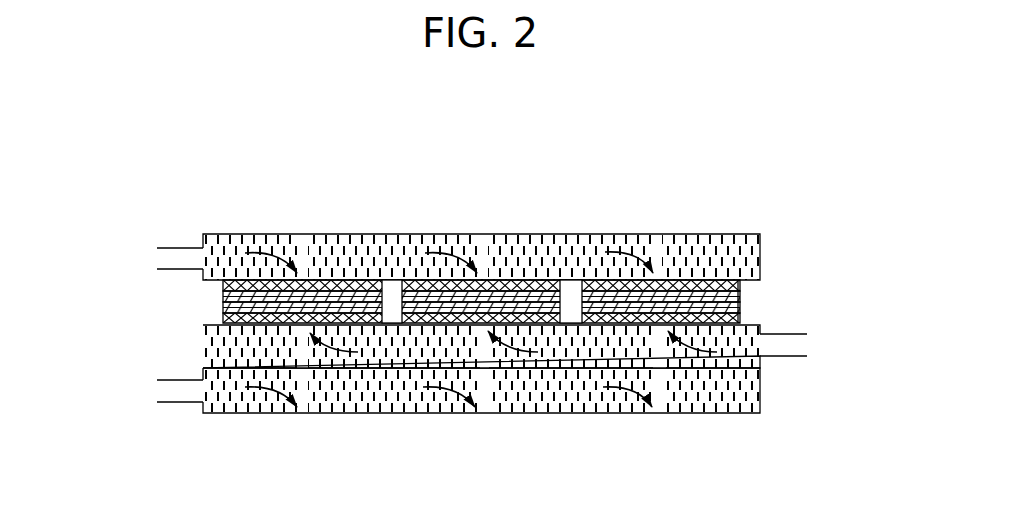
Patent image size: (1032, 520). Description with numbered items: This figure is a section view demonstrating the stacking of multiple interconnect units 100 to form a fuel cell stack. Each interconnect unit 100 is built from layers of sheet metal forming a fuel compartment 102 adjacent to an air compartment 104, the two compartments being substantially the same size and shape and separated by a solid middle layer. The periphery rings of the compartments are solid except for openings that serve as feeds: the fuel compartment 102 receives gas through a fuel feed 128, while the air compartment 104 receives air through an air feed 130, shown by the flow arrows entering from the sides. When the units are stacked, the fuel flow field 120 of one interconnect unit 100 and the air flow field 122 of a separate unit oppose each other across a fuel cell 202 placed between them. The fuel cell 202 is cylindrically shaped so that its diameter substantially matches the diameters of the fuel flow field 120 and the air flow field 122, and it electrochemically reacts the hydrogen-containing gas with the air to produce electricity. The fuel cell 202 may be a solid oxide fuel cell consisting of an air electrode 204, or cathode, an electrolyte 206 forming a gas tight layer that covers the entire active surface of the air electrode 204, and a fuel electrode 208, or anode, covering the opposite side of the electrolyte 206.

The interconnect unit 100 is at (474, 314).
The fuel compartment 102 is at (742, 347).
The air compartment 104 is at (333, 252).
The fuel flow field 120 is at (449, 336).
The air flow field 122 is at (223, 283).
The fuel feed 128 is at (775, 345).
The air feed 130 is at (175, 259).
The fuel cell 202 is at (749, 294).
The air electrode 204 is at (223, 294).
The electrolyte 206 is at (223, 306).
The fuel electrode 208 is at (223, 320).